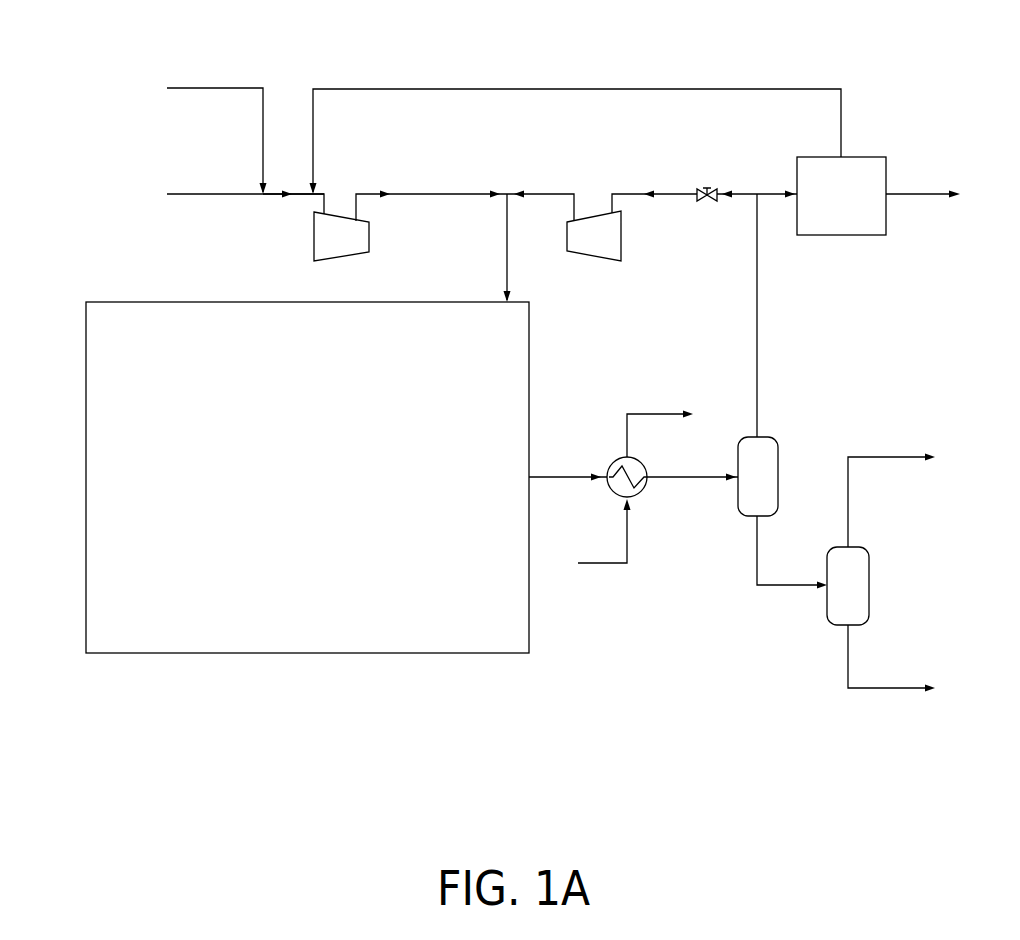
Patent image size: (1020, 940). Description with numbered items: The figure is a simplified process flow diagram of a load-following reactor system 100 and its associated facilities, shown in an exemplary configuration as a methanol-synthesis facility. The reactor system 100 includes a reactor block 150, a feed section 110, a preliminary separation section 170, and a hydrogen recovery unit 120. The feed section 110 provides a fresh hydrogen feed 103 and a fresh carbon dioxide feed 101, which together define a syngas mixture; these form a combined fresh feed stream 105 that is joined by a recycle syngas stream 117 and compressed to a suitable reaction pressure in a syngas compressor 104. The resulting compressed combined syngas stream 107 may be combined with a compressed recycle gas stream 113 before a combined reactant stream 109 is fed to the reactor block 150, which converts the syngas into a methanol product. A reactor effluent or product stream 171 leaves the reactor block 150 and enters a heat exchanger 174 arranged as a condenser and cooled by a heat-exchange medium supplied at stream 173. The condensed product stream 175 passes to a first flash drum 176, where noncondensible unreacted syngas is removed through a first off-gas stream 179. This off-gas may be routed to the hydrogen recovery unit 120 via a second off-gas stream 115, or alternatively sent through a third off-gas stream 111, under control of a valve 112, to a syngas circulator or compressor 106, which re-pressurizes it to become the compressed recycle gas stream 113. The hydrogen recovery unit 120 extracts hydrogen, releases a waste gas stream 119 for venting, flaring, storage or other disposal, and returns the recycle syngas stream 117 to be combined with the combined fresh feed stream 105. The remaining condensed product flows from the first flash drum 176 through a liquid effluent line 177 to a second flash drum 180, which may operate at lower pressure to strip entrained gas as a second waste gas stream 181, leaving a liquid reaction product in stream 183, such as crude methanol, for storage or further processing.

The reactor system 100 is at (281, 678).
The fresh CO2 feed 101 is at (181, 195).
The fresh H2 feed 103 is at (178, 87).
The syngas compressor 104 is at (369, 236).
The combined fresh feed stream 105 is at (274, 195).
The syngas circulator or compressor 106 is at (621, 236).
The compressed combined syngas stream 107 is at (406, 194).
The combined reactant stream 109 is at (505, 250).
The feed section 110 is at (164, 140).
The third off-gas stream 111 is at (623, 194).
The valve 112 is at (707, 188).
The compressed recycle gas stream 113 is at (537, 194).
The second off-gas stream 115 is at (773, 194).
The recycle syngas stream 117 is at (843, 103).
The waste gas stream 119 is at (920, 194).
The hydrogen recovery unit 120 is at (866, 209).
The reactor block 150 is at (320, 486).
The preliminary separation section 170 is at (740, 689).
The reactor effluent or product stream 171 is at (567, 477).
The heat-exchange medium stream 173 is at (596, 564).
The heat exchanger 174 is at (609, 490).
The condensed product stream 175 is at (680, 478).
The first flash drum 176 is at (775, 440).
The liquid effluent line 177 is at (757, 582).
The first off-gas stream 179 is at (757, 310).
The second flash drum 180 is at (860, 550).
The second waste gas stream 181 is at (882, 456).
The reaction product stream 183 is at (893, 688).